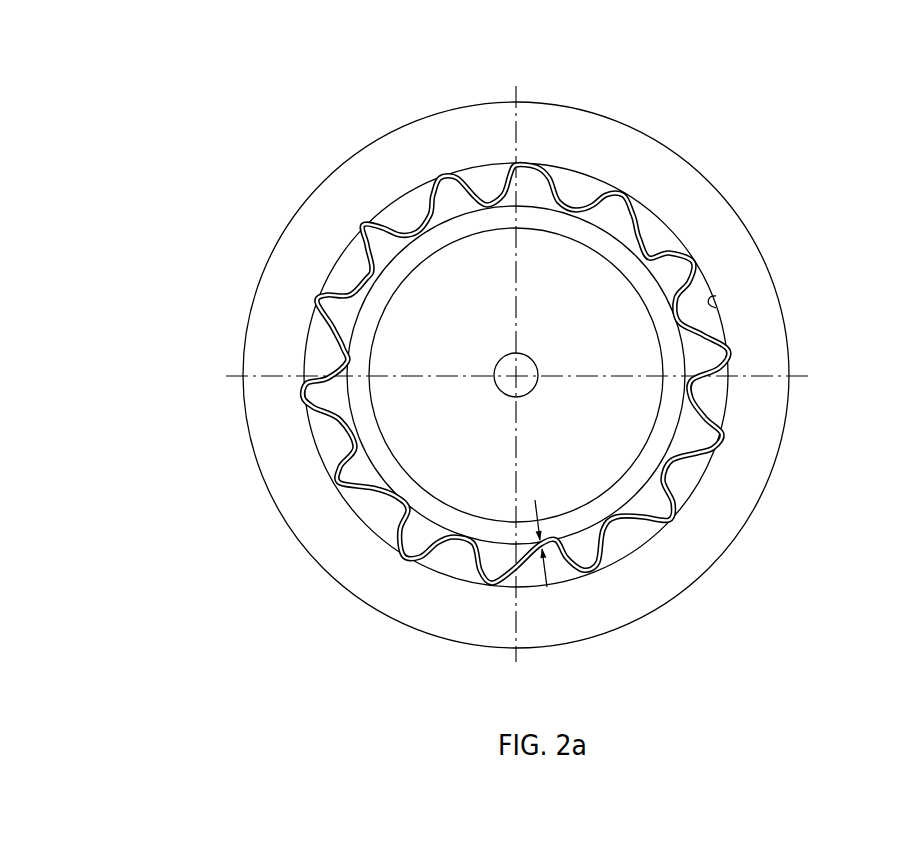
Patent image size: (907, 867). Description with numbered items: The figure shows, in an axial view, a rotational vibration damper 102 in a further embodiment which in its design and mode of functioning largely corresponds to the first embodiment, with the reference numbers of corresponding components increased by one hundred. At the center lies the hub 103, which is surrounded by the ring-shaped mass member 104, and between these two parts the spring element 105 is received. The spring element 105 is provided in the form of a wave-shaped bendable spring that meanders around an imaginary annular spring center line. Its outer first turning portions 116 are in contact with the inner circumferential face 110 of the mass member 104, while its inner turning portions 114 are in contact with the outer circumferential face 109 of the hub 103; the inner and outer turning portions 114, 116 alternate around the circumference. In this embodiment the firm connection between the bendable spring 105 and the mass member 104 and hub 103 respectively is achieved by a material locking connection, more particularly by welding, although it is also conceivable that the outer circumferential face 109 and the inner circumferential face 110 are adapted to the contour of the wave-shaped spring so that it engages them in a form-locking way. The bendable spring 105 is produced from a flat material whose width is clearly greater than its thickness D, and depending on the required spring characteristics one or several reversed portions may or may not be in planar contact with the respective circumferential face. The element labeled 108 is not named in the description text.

The rotational vibration damper 102 is at (290, 113).
The hub 103 is at (516, 375).
The mass member 104 is at (778, 345).
The spring element 105 is at (643, 210).
The inner sleeve ring 108 is at (636, 473).
The outer circumferential face 109 is at (680, 433).
The inner circumferential face 110 is at (716, 305).
The inner turning portions 114 is at (690, 395).
The outer first turning portions 116 is at (695, 259).